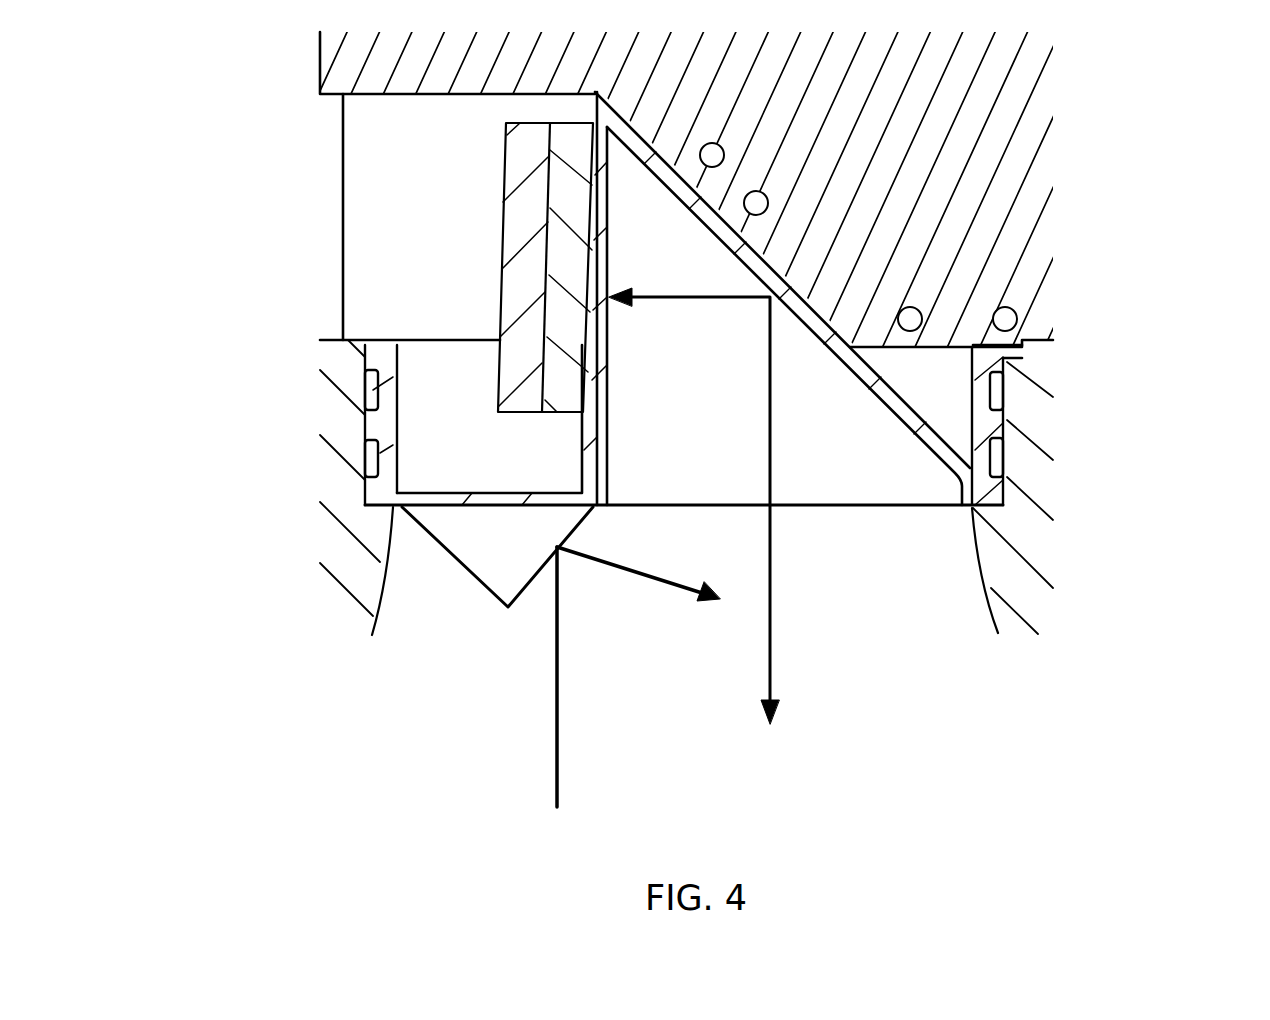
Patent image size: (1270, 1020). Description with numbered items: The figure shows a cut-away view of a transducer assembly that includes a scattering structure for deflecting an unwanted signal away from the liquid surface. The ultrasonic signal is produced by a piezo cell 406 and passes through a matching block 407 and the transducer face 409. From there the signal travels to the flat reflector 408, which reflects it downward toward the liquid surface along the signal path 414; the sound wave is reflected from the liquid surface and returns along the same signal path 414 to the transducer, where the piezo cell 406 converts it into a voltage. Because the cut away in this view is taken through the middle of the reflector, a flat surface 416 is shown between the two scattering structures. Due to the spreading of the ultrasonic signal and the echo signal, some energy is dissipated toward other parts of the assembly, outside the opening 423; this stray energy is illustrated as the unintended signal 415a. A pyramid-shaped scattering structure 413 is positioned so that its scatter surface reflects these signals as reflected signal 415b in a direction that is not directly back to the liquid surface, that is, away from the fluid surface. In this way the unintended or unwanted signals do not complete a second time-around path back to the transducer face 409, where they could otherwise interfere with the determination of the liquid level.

The piezo cell 406 is at (513, 185).
The matching block 407 is at (570, 320).
The flat reflector 408 is at (890, 387).
The transducer face 409 is at (582, 433).
The scattering structure 413 is at (427, 540).
The signal path 414 is at (785, 583).
The unintended signal 415a is at (555, 685).
The reflected signal 415b is at (667, 585).
The flat surface 416 is at (495, 510).
The opening 423 is at (870, 510).